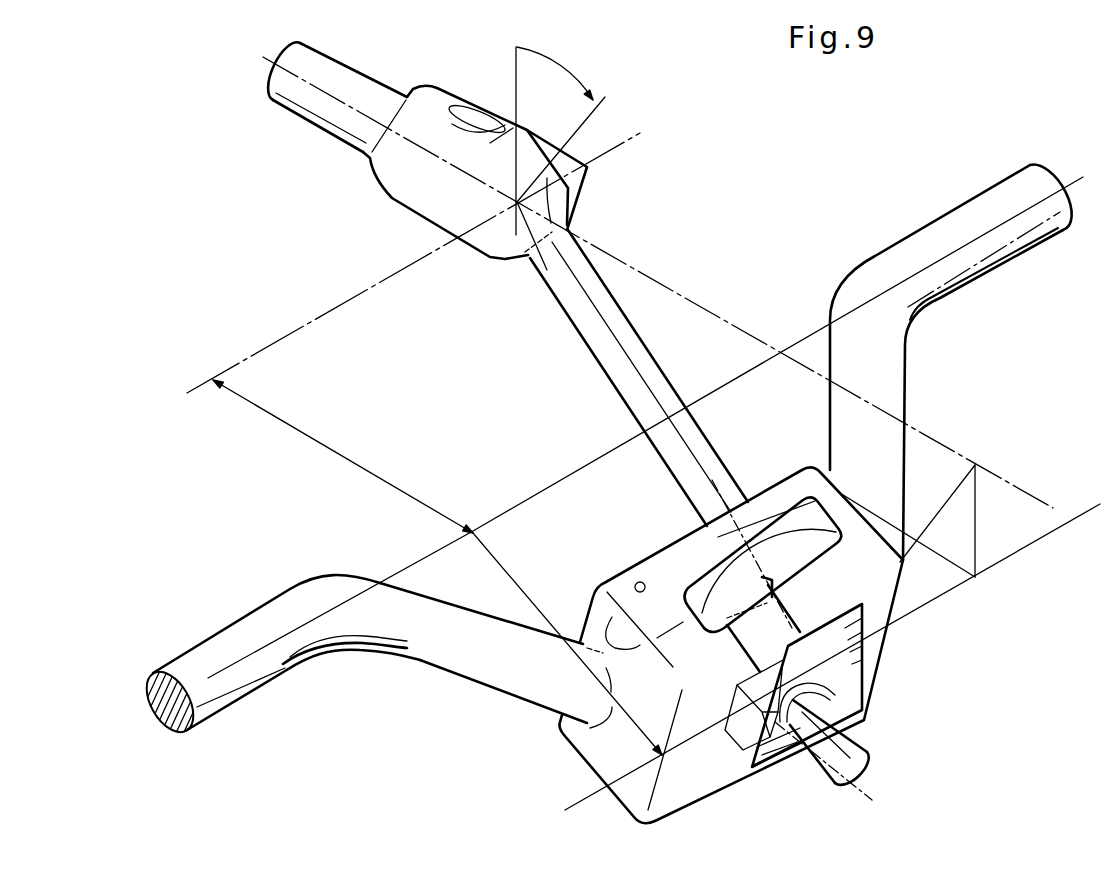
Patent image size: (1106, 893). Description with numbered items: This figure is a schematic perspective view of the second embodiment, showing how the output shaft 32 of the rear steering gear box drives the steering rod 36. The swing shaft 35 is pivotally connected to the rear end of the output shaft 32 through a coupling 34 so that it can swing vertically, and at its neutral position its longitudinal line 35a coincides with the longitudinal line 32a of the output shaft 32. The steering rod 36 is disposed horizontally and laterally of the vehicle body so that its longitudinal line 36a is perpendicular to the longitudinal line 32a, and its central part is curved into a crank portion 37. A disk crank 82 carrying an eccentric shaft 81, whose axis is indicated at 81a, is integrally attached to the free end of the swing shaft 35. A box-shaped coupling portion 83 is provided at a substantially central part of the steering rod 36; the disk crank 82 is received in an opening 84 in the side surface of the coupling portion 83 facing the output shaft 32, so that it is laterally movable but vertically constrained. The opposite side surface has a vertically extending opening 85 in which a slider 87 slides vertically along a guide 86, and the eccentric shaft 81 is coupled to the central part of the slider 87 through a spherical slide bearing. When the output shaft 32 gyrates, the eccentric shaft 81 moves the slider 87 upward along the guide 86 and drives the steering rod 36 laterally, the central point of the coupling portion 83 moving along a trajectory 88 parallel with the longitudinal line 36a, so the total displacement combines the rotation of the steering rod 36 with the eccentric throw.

The output shaft 32 is at (350, 67).
The longitudinal line of the output shaft 32a is at (633, 266).
The coupling 34 is at (458, 92).
The swing shaft 35 is at (563, 312).
The longitudinal line of the swing shaft 35a is at (630, 373).
The steering rod 36 is at (300, 585).
The longitudinal line of the steering rod 36a is at (520, 500).
The crank portion 37 is at (467, 681).
The eccentric shaft 81 is at (810, 760).
The pivot shaft axis 81a is at (872, 797).
The disk crank 82 is at (780, 517).
The box-shaped coupling portion 83 is at (590, 760).
The opening 84 is at (636, 585).
The opening 85 is at (740, 750).
The guide 86 is at (840, 620).
The slider 87 is at (765, 768).
The trajectory 88 is at (832, 657).